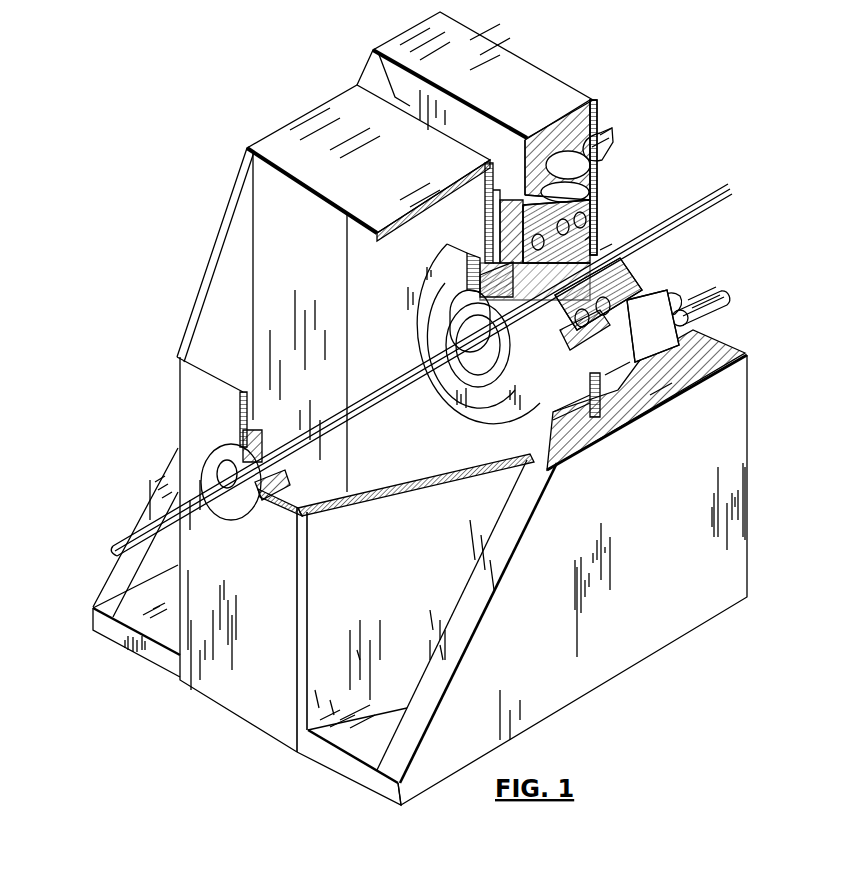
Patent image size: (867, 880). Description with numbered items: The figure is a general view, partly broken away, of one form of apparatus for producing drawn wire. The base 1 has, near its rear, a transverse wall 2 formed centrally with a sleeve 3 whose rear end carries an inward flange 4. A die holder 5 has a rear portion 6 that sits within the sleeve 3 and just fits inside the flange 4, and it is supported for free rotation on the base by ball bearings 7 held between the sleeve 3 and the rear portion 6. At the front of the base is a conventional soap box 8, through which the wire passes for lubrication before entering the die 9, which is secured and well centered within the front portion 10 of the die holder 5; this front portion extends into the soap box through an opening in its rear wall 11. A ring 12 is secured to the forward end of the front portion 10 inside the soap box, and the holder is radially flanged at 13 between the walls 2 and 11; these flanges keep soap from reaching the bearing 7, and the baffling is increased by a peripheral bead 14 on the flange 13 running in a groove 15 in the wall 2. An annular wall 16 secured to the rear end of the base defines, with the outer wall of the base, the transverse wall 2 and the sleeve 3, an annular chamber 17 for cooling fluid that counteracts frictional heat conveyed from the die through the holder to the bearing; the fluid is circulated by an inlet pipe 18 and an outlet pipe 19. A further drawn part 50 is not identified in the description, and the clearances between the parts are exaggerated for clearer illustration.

The base 1 is at (621, 650).
The transverse wall 2 is at (573, 133).
The sleeve 3 is at (667, 295).
The inward flange 4 is at (605, 250).
The die holder 5 is at (605, 340).
The rear portion 6 is at (587, 240).
The ball bearings 7 is at (590, 227).
The soap box 8 is at (340, 697).
The die 9 is at (423, 330).
The front portion 10 is at (527, 387).
The wall 11 is at (473, 207).
The ring 12 is at (467, 403).
The radial flange 13 is at (620, 377).
The peripheral bead 14 is at (662, 393).
The groove 15 is at (687, 373).
The annular wall 16 is at (598, 110).
The annular chamber 17 is at (605, 137).
The inlet pipe 18 is at (612, 140).
The outlet pipe 19 is at (705, 303).
The feed rod 50 is at (243, 510).